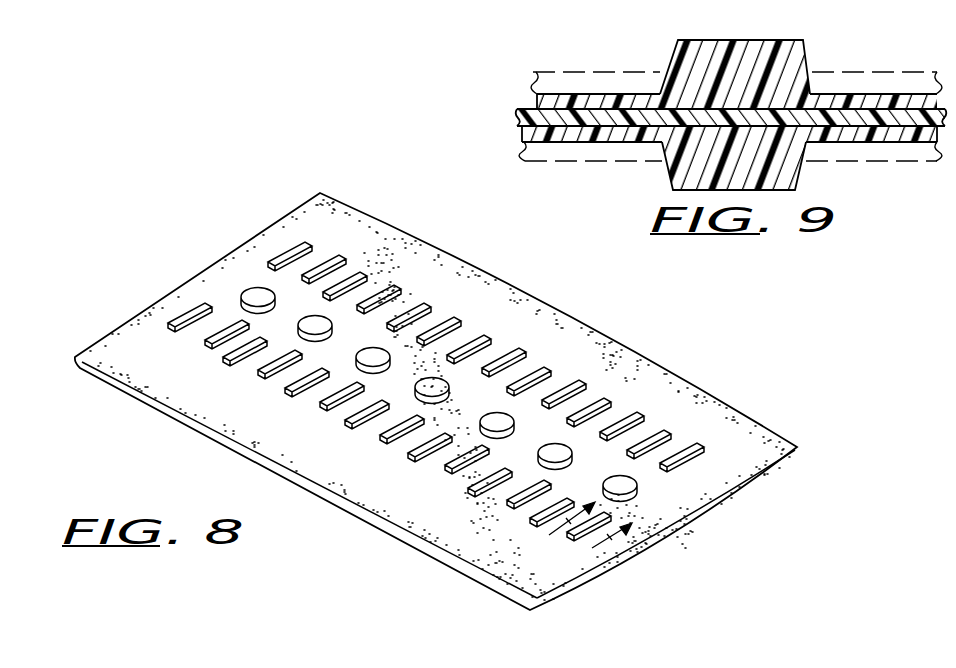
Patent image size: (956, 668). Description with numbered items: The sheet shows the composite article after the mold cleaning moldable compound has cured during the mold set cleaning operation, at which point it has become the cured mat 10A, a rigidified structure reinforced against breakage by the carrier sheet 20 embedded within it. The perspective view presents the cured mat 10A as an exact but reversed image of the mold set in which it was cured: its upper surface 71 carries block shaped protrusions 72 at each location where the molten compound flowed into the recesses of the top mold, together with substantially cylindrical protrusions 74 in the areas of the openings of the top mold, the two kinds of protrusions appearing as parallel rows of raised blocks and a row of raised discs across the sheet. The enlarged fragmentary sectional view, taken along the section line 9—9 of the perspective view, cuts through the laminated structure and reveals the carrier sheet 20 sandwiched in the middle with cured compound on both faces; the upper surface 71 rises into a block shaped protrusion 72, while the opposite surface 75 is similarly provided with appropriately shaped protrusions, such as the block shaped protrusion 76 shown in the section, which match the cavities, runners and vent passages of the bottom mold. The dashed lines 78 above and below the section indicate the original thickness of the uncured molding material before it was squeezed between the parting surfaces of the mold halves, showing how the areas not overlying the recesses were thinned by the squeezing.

In FIG. 8, the cured mat 10A is at (219, 245).
In FIG. 9, the cured mat 10A is at (809, 46).
In FIG. 9, the carrier sheet 20 is at (518, 115).
In FIG. 8, the upper surface 71 is at (729, 415).
In FIG. 9, the upper surface 71 is at (612, 92).
In FIG. 8, the block shaped protrusions 72 is at (359, 275).
In FIG. 9, the block shaped protrusions 72 is at (673, 50).
In FIG. 8, the substantially cylindrical protrusions 74 is at (310, 316).
In FIG. 8, the opposite surface 75 is at (748, 483).
In FIG. 9, the opposite surface 75 is at (567, 143).
In FIG. 9, the block shaped protrusion 76 is at (665, 170).
In FIG. 9, the dashed lines 78 is at (546, 72).
In FIG. 8, the section line 9— 9 is at (584, 536).